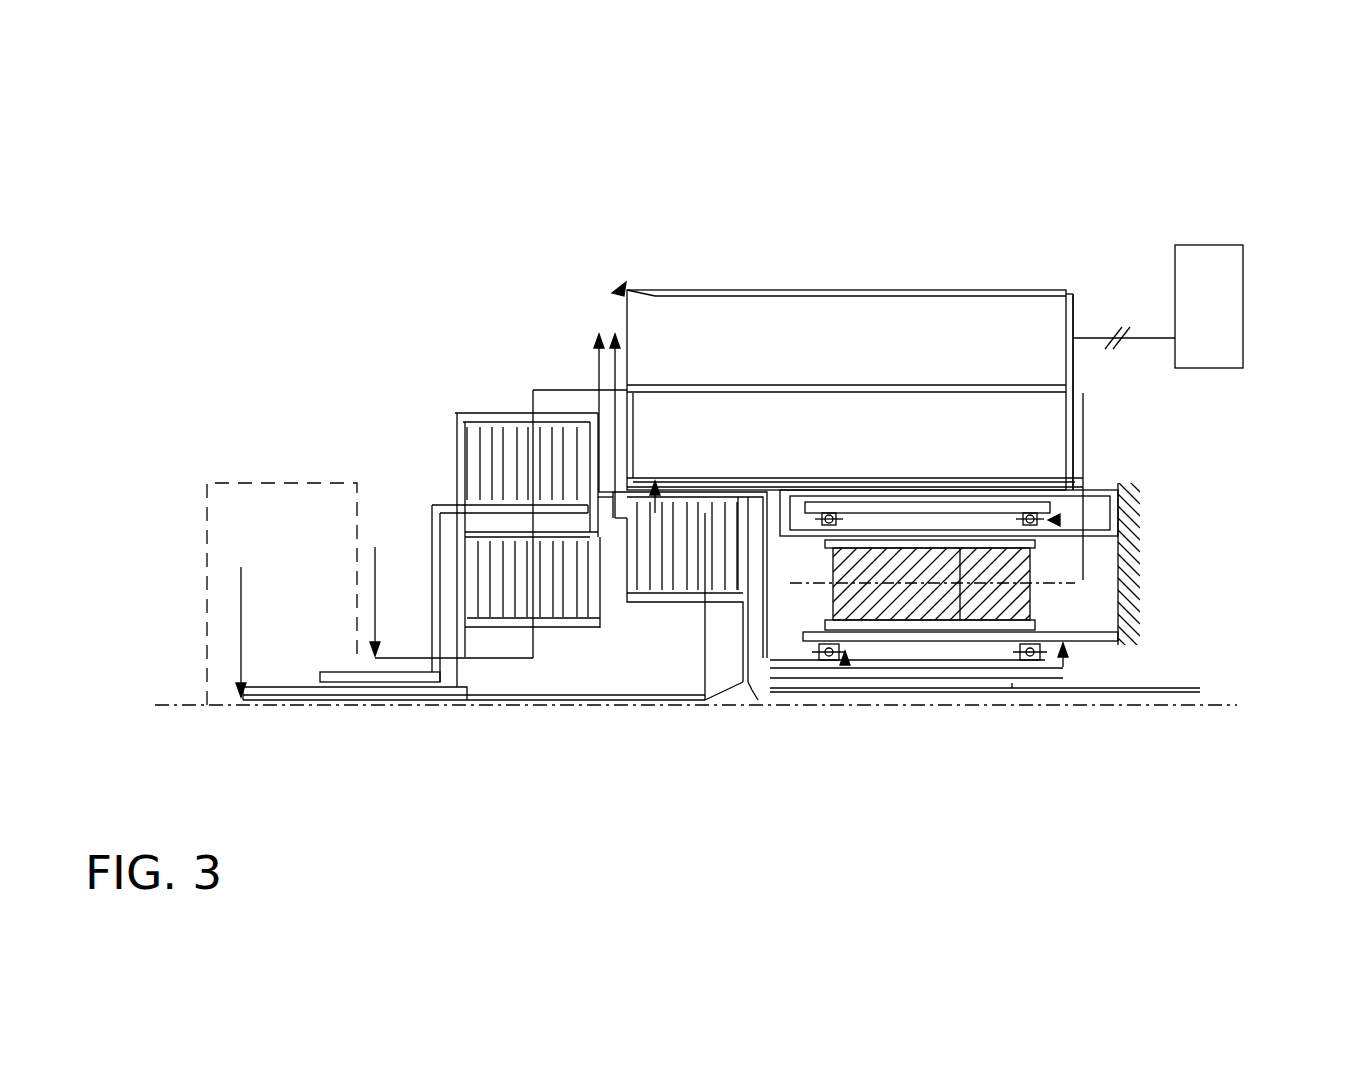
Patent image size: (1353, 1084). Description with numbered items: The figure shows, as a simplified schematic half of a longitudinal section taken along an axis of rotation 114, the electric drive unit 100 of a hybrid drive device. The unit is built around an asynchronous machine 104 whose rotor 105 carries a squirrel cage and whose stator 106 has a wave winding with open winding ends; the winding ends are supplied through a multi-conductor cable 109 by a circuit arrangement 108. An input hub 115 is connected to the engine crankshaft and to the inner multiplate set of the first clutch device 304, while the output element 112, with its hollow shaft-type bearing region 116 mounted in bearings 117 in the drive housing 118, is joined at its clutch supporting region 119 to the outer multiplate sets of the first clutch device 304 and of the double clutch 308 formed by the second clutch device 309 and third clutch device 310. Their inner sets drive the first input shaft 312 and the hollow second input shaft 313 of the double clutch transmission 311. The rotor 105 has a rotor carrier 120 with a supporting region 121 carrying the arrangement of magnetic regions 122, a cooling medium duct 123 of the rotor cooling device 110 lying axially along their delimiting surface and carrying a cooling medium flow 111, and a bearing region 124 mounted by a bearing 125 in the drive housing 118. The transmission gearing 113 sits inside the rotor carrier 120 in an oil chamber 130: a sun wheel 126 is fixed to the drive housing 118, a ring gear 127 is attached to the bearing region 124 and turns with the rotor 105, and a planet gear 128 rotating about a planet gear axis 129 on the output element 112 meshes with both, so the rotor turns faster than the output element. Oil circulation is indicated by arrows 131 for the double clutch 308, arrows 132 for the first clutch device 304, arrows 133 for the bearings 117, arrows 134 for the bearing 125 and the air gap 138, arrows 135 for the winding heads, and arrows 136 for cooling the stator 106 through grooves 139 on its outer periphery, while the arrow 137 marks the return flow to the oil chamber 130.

The electric drive unit 100 is at (545, 195).
The asynchronous machine 104 is at (1016, 232).
The rotor 105 is at (1180, 403).
The stator 106 is at (943, 310).
The circuit arrangement 108 is at (1215, 255).
The multi-conductor cable 109 is at (1133, 330).
The rotor cooling device 110 is at (863, 482).
The cooling medium flow 111 is at (929, 478).
The output element 112 is at (896, 775).
The transmission gearing 113 is at (1212, 533).
The axis of rotation 114 is at (1220, 706).
The input hub 115 is at (1198, 692).
The bearing region 116 is at (893, 666).
The bearings 117 is at (829, 655).
The drive housing 118 is at (1131, 620).
The clutch supporting region 119 is at (738, 497).
The rotor carrier 120 is at (1197, 443).
The supporting region 121 is at (1047, 490).
The arrangement of magnetic regions 122 is at (1053, 418).
The cooling medium duct 123 is at (745, 477).
The bearing region 124 is at (1048, 533).
The bearing 125 is at (829, 515).
The sun wheel 126 is at (1038, 625).
The ring gear 127 is at (1035, 543).
The planet gear 128 is at (1022, 596).
The planet gear axis 129 is at (960, 583).
The oil chamber 130 is at (1102, 624).
The arrows 131 is at (533, 397).
The arrows 132 is at (706, 640).
The arrows 133 is at (1012, 684).
The arrows 134 is at (1083, 398).
The arrows 135 is at (600, 333).
The arrows 136 is at (622, 276).
The arrow 137 is at (1066, 667).
The air gap 138 is at (733, 388).
The cooling medium grooves 139 is at (818, 293).
The first clutch device 304 is at (658, 563).
The double clutch 308 is at (418, 380).
The second clutch device 309 is at (482, 562).
The third clutch device 310 is at (510, 458).
The double clutch transmission 311 is at (258, 483).
The first input shaft 312 is at (297, 688).
The second input shaft 313 is at (373, 668).